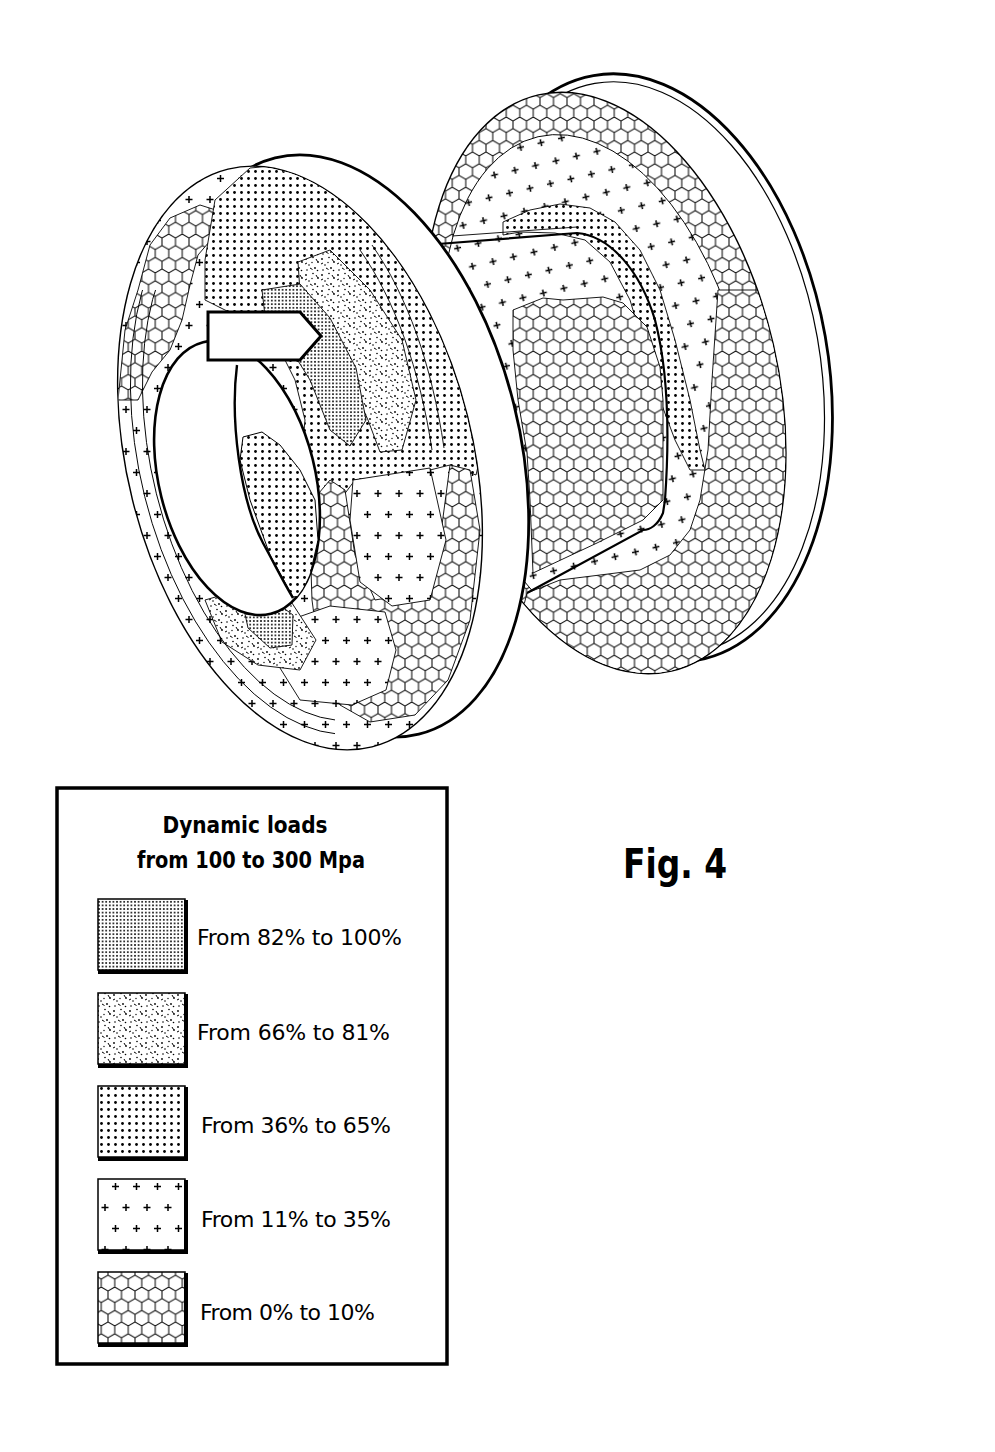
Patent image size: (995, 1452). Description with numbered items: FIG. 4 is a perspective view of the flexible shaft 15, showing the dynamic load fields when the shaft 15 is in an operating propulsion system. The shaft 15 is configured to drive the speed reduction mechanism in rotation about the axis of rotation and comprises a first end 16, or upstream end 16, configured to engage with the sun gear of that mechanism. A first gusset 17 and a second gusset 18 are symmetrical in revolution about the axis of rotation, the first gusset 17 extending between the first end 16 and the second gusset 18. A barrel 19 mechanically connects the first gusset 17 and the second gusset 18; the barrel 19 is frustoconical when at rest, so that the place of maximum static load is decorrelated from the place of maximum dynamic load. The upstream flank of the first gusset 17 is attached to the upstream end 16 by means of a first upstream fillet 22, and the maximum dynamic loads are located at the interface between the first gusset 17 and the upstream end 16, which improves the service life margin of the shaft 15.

The shaft 15 is at (469, 407).
The first end 16 is at (203, 567).
The first gusset 17 is at (323, 439).
The second gusset 18 is at (732, 647).
The barrel 19 is at (573, 543).
The first upstream fillet 22 is at (330, 262).